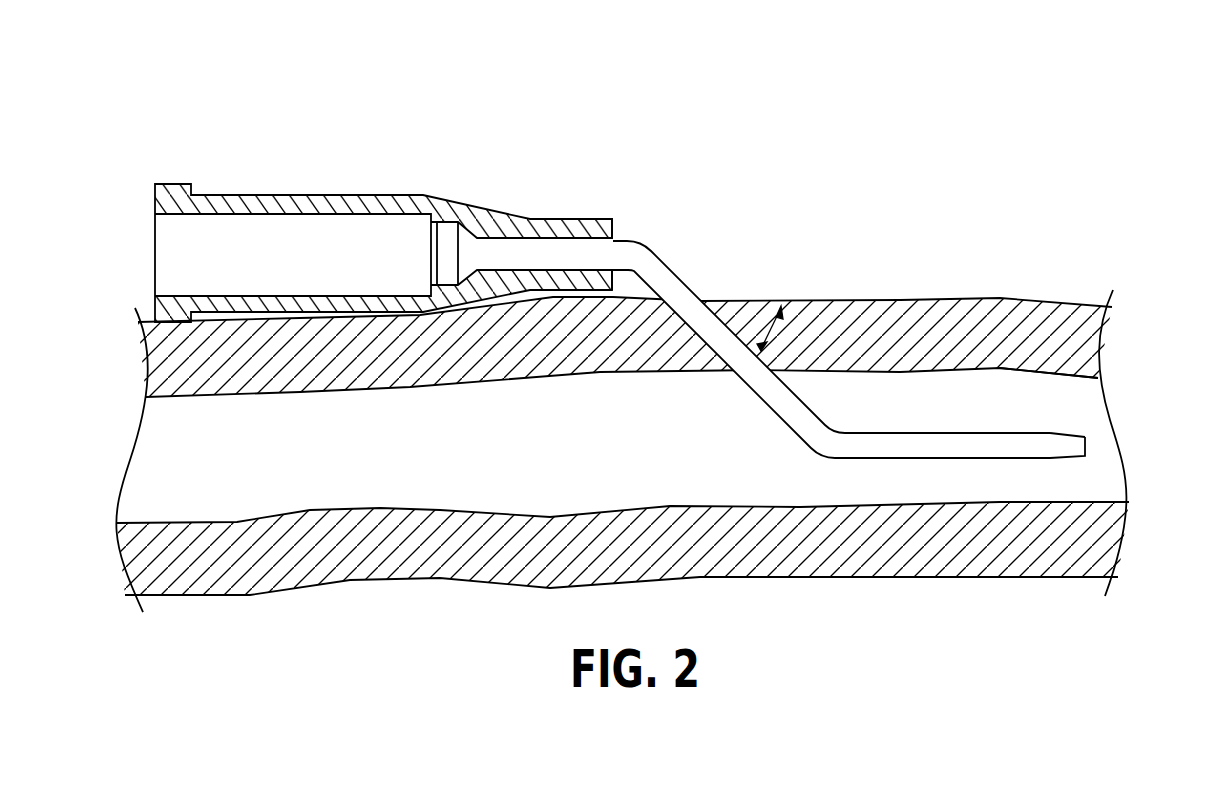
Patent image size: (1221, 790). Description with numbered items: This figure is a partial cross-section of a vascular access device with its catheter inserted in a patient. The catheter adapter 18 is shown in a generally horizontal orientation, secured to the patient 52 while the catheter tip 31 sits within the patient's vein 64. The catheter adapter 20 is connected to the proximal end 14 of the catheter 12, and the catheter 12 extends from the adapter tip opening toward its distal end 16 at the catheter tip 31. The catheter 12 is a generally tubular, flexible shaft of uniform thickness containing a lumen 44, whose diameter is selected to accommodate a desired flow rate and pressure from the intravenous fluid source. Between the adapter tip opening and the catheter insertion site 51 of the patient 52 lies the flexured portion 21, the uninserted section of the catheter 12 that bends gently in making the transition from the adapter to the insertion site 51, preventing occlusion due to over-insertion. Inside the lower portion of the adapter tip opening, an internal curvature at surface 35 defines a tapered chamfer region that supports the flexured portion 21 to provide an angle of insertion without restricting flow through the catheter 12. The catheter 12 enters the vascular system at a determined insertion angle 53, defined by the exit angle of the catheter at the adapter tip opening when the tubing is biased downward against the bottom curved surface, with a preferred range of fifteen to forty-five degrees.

The catheter adapter 18 is at (672, 278).
The catheter adapter 20 is at (405, 275).
The catheter 12 is at (525, 248).
The proximal end 14 is at (598, 218).
The flexured portion 21 is at (901, 357).
The surface 35 is at (617, 275).
The catheter insertion site 51 is at (625, 318).
The insertion angle 53 is at (783, 323).
The patient 52 is at (1045, 305).
The lumen 44 is at (935, 437).
The vein 64 is at (1087, 407).
The catheter tip 31 is at (1087, 438).
The distal end 16 is at (1073, 448).